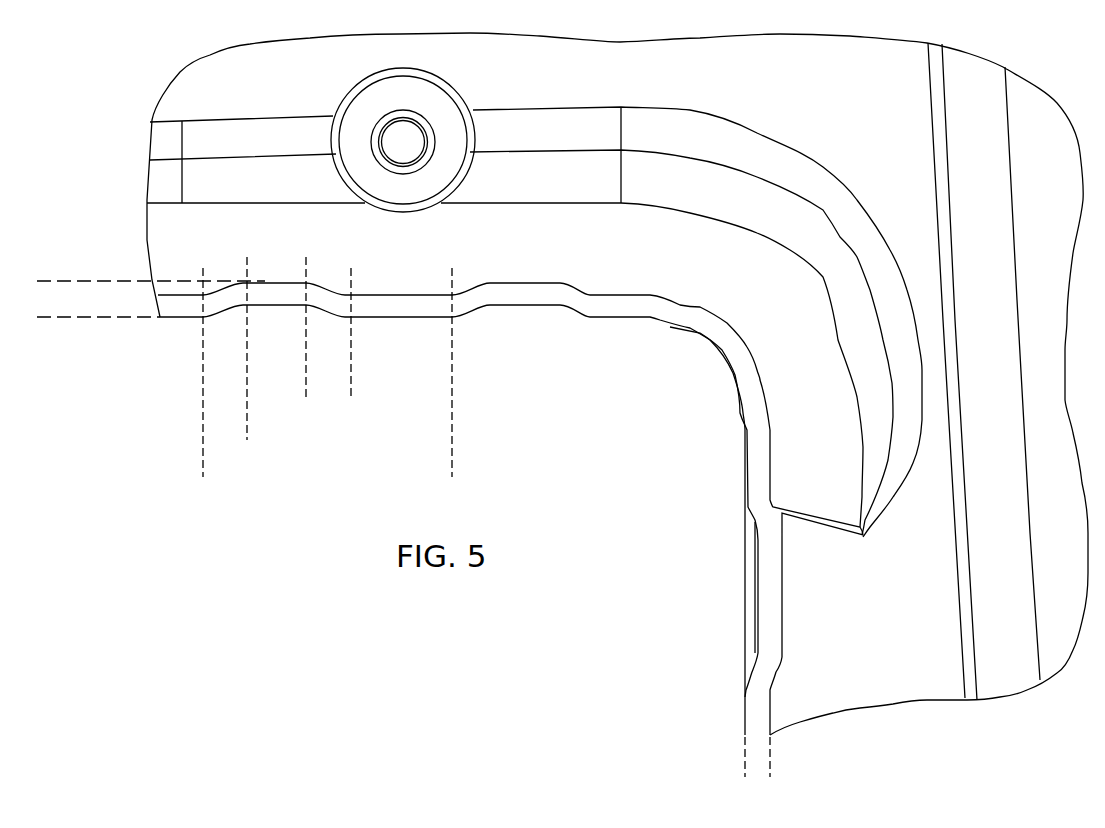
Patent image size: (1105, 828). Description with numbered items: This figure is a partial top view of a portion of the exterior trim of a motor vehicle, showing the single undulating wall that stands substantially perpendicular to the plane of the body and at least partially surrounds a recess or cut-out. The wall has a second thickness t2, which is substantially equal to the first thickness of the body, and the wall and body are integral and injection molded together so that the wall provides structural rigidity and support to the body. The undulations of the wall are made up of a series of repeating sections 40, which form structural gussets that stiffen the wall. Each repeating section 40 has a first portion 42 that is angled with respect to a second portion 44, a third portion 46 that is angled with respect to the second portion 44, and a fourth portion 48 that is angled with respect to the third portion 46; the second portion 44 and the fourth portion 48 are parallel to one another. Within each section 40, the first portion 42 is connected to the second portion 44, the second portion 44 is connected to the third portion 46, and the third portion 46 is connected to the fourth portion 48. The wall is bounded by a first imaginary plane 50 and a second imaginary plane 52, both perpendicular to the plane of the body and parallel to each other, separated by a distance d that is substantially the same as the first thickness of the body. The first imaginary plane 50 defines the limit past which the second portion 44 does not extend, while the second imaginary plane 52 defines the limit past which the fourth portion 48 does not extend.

The repeating section 40 is at (452, 474).
The first portion 42 is at (247, 413).
The second portion 44 is at (306, 347).
The third portion 46 is at (306, 376).
The fourth portion 48 is at (452, 347).
The first imaginary plane 50 is at (107, 278).
The second imaginary plane 52 is at (122, 318).
The distance d is at (62, 317).
The second thickness t2 is at (770, 756).